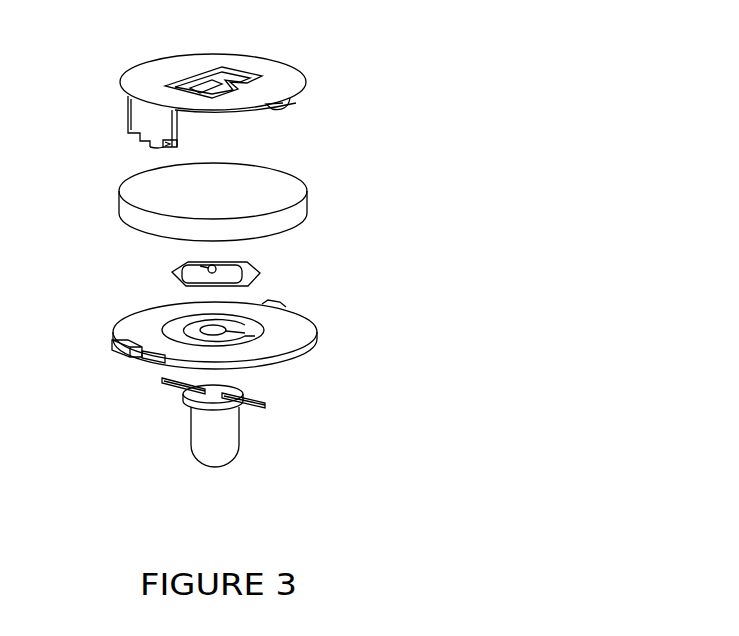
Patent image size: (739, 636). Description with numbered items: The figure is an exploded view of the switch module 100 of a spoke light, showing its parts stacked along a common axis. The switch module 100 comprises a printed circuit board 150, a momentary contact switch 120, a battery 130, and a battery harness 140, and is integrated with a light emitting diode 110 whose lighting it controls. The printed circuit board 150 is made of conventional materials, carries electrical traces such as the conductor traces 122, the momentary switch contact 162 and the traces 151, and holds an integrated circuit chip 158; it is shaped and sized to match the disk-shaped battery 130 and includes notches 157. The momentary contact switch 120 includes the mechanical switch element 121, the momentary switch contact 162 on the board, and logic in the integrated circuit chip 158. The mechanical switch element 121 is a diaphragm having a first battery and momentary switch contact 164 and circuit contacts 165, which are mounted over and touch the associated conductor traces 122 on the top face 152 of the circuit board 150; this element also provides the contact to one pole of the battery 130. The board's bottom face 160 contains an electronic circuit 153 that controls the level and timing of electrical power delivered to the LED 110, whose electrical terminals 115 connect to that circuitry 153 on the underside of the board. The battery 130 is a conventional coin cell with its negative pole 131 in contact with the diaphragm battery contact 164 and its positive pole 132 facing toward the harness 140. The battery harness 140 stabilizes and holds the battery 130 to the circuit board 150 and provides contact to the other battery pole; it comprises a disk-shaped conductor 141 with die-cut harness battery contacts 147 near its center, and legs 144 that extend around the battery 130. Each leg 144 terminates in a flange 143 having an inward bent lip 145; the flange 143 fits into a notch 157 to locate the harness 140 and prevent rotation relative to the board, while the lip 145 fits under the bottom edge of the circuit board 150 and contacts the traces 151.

The switch module 100 is at (145, 455).
The light emitting diode 110 is at (215, 443).
The electrical terminals 115 is at (267, 403).
The momentary contact switch 120 is at (282, 267).
The mechanical switch element 121 is at (260, 285).
The conductor traces 122 is at (213, 318).
The battery 130 is at (294, 157).
The negative pole 131 is at (285, 238).
The positive pole 132 is at (258, 193).
The battery harness 140 is at (306, 53).
The disk-shaped conductor 141 is at (270, 76).
The flange 143 is at (152, 146).
The legs 144 is at (150, 122).
The inward bent lip 145 is at (178, 147).
The harness battery contacts 147 is at (286, 101).
The printed circuit board 150 is at (333, 312).
The traces 151 is at (150, 361).
The top face 152 is at (130, 322).
The electronic circuit 153 is at (154, 379).
The notches 157 is at (117, 343).
The integrated circuit chip 158 is at (246, 360).
The bottom face 160 is at (266, 371).
The momentary switch contact 162 is at (262, 340).
The battery and momentary switch contact 164 is at (209, 267).
The circuit contacts 165 is at (176, 272).